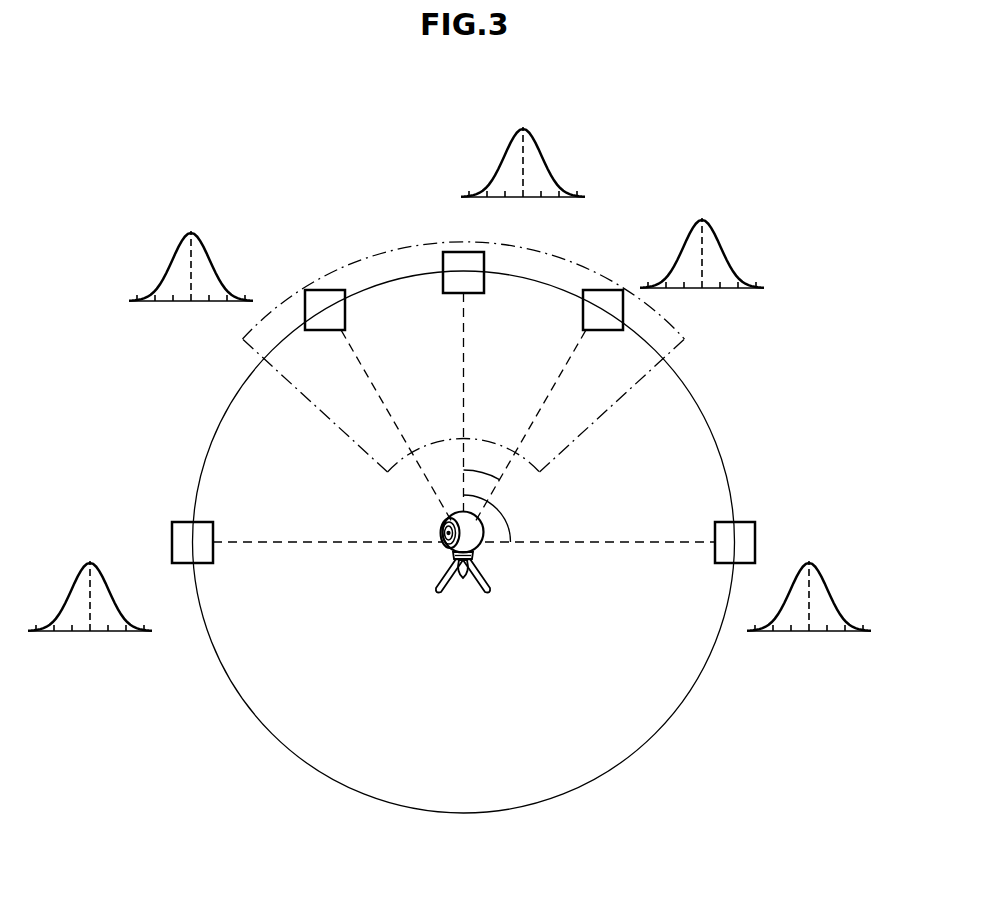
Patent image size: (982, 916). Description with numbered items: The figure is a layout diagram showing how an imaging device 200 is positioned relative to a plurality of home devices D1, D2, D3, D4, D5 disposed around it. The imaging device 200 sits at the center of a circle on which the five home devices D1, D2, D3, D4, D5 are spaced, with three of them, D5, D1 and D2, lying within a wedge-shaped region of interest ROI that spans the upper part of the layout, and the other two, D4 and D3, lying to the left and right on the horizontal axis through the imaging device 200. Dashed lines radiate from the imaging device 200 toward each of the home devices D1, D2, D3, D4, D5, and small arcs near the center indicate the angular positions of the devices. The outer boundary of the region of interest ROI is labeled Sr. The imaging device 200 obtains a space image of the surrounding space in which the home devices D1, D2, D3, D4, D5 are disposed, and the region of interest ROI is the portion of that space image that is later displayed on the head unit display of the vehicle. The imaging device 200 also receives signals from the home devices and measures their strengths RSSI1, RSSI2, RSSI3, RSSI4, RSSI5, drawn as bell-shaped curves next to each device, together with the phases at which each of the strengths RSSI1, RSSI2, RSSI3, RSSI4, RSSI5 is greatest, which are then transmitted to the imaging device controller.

The imaging device 200 is at (483, 548).
The home device D1 is at (463, 252).
The home device D2 is at (604, 290).
The home device D3 is at (755, 541).
The home device D4 is at (172, 541).
The home device D5 is at (322, 290).
The sensing range Sr is at (402, 248).
The region of interest ROI is at (684, 339).
The strength of received signal RSSI1 is at (533, 162).
The strength of received signal RSSI2 is at (711, 253).
The strength of received signal RSSI3 is at (818, 596).
The strength of received signal RSSI4 is at (99, 596).
The strength of received signal RSSI5 is at (200, 266).